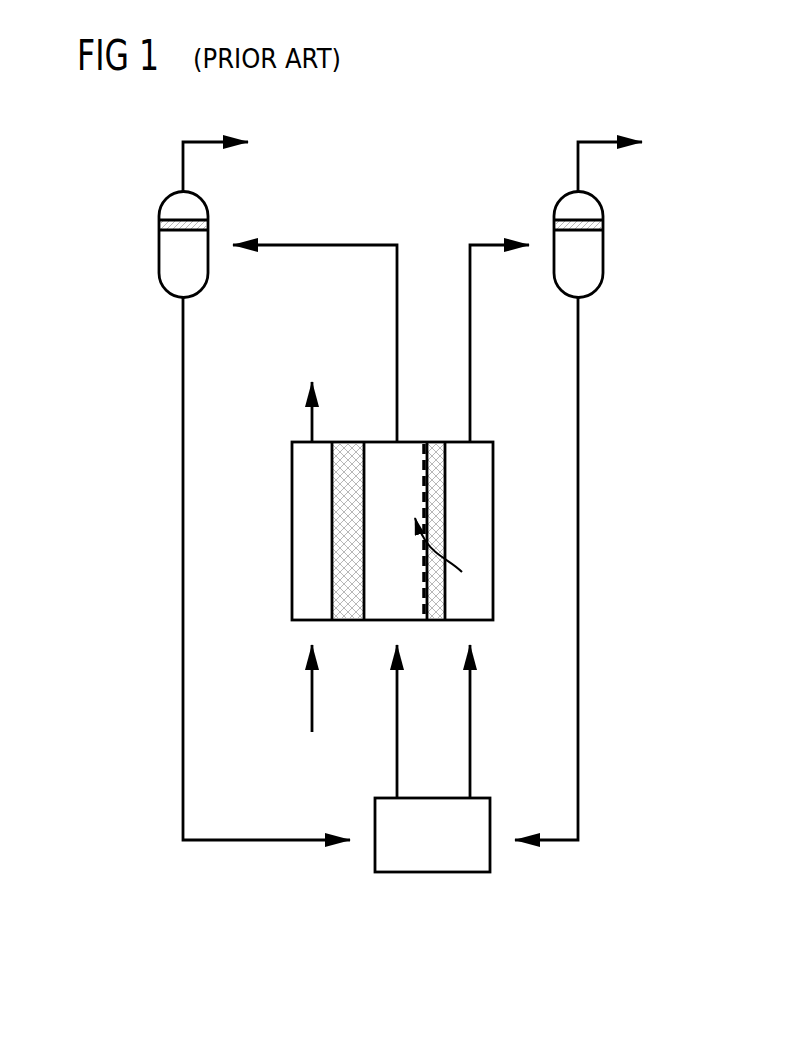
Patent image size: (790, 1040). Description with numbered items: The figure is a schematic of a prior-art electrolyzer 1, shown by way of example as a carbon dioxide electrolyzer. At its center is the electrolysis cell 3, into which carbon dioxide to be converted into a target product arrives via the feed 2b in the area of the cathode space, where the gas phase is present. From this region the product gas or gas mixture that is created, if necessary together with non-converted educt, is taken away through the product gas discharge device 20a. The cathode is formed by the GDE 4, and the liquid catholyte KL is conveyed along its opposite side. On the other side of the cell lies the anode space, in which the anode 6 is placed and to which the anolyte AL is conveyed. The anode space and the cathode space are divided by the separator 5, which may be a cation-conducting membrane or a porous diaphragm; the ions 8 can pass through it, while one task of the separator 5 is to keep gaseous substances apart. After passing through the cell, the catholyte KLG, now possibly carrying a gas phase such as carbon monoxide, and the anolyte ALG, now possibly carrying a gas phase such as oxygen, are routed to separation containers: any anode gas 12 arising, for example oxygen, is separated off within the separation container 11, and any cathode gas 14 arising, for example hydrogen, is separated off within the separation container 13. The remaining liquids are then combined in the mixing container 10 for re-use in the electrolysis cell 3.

The electrolyzer 1 is at (108, 676).
The feed 2b is at (312, 688).
The electrolysis cell 3 is at (300, 530).
The GDE 4 is at (348, 442).
The separator 5 is at (424, 470).
The anode 6 is at (435, 450).
The ions 8 is at (453, 543).
The mixing container 10 is at (422, 798).
The separation container 11 is at (593, 253).
The anode gas 12 is at (578, 168).
The separation container 13 is at (167, 253).
The cathode gas 14 is at (183, 168).
The product gas discharge device 20a is at (312, 413).
The catholyte KL is at (397, 708).
The anolyte AL is at (470, 708).
The catholyte with gas phase KLG is at (397, 328).
The anolyte with gas phase ALG is at (470, 328).